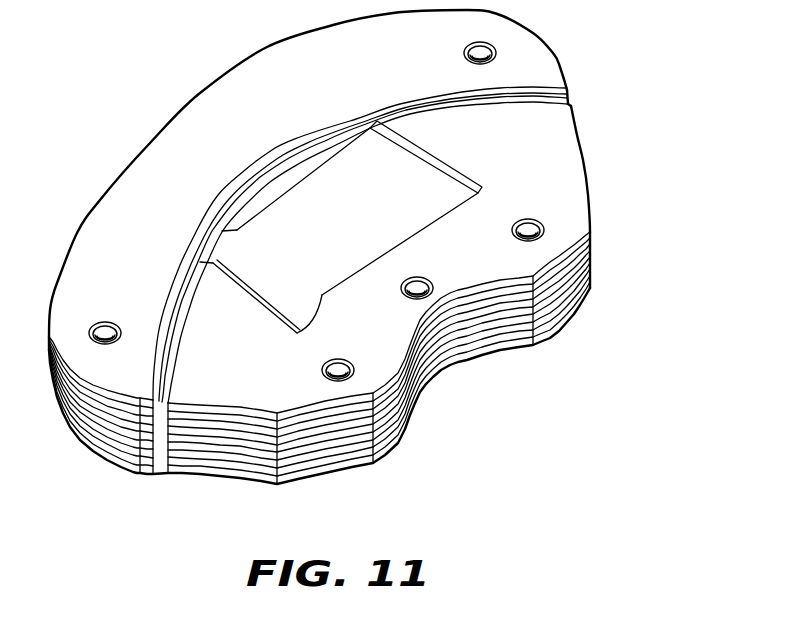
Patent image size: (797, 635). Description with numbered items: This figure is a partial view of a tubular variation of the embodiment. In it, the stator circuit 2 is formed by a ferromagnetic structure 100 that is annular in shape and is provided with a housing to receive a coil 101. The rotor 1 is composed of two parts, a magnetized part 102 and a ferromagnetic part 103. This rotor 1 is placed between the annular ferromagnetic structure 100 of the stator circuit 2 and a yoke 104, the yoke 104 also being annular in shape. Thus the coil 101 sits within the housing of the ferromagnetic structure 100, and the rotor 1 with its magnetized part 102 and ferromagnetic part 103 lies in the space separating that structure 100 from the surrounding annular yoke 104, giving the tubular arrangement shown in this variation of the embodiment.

The rotor 1 is at (160, 493).
The stator circuit 2 is at (612, 183).
The ferromagnetic structure 100 is at (528, 258).
The coil 101 is at (358, 224).
The magnetized part 102 is at (350, 137).
The ferromagnetic part 103 is at (163, 380).
The yoke 104 is at (170, 146).